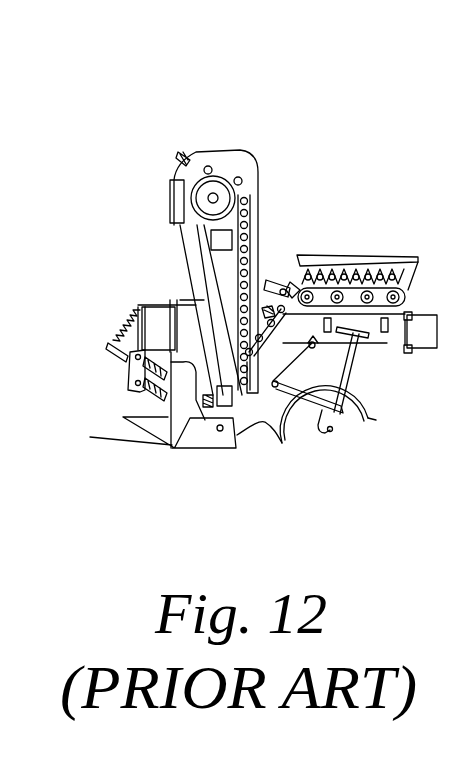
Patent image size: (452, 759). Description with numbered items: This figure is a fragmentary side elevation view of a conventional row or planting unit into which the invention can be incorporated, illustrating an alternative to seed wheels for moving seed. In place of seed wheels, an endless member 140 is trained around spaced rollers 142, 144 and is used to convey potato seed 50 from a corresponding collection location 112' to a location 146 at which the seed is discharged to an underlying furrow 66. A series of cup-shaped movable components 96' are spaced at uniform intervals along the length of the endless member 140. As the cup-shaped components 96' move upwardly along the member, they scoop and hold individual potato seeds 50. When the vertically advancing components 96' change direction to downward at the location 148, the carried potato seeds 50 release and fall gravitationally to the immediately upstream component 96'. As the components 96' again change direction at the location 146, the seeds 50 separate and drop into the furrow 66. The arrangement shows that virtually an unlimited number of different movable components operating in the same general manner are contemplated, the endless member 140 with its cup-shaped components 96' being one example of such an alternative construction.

The location 148 is at (183, 157).
The cup-shaped movable components 96' is at (278, 135).
The roller 144 is at (218, 172).
The endless member 140 is at (250, 216).
The potato seed 50 is at (252, 246).
The collection location 112' is at (360, 286).
The furrow 66 is at (282, 443).
The roller 142 is at (215, 447).
The location 146 is at (207, 395).